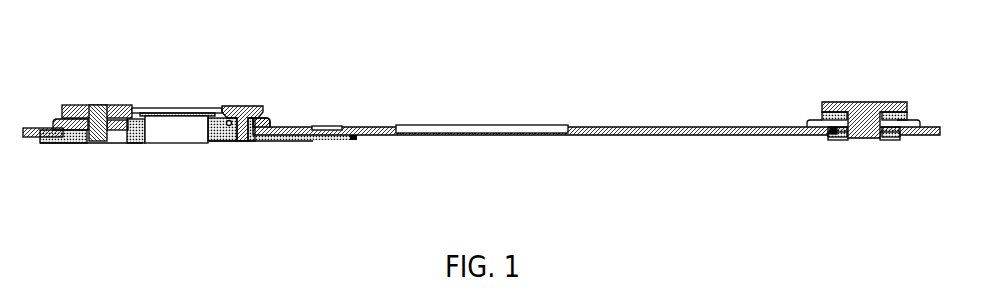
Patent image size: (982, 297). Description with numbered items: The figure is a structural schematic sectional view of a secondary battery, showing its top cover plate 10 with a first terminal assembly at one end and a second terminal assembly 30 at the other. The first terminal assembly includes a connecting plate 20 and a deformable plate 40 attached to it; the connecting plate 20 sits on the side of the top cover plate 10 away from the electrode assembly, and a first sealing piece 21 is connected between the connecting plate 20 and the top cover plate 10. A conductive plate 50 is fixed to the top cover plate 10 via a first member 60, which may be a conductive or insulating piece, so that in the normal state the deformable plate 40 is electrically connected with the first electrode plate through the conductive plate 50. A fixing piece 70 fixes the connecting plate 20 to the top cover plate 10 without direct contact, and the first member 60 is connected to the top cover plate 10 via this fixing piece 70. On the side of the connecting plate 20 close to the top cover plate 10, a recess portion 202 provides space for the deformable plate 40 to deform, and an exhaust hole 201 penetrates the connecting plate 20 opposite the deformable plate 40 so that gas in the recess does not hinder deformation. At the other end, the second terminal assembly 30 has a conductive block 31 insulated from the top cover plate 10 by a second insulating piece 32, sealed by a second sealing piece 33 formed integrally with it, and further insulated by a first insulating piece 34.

The top cover plate 10 is at (600, 127).
The connecting plate 20 is at (262, 118).
The first sealing piece 21 is at (275, 119).
The second terminal assembly 30 is at (872, 125).
The conductive block 31 is at (847, 102).
The second insulating piece 32 is at (822, 116).
The second sealing piece 33 is at (840, 137).
The first insulating piece 34 is at (828, 135).
The deformable plate 40 is at (148, 107).
The conductive plate 50 is at (210, 141).
The first member 60 is at (117, 141).
The fixing piece 70 is at (247, 141).
The exhaust hole 201 is at (176, 108).
The recess portion 202 is at (209, 108).